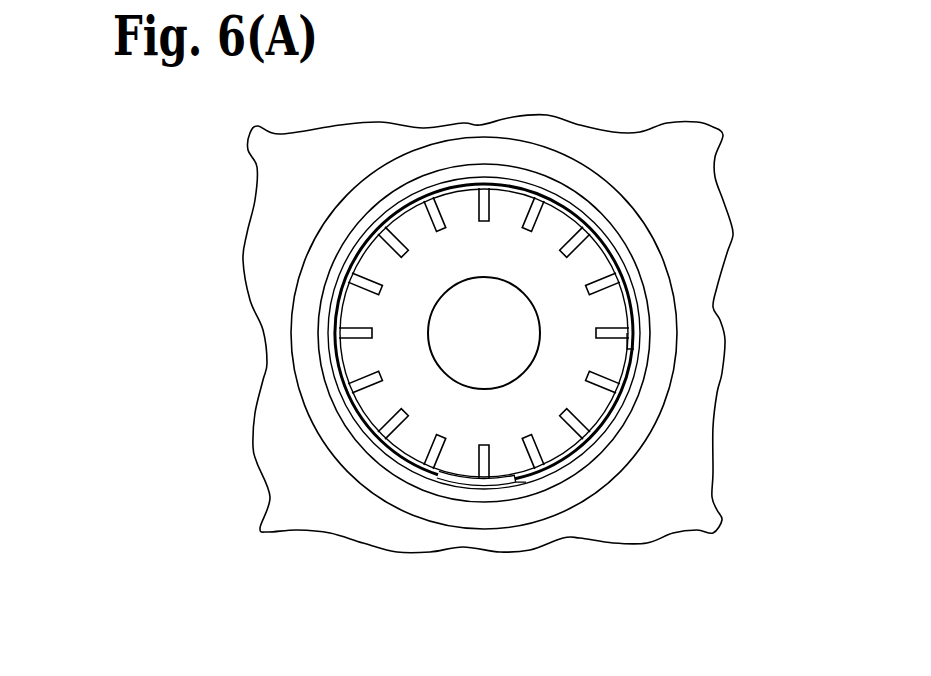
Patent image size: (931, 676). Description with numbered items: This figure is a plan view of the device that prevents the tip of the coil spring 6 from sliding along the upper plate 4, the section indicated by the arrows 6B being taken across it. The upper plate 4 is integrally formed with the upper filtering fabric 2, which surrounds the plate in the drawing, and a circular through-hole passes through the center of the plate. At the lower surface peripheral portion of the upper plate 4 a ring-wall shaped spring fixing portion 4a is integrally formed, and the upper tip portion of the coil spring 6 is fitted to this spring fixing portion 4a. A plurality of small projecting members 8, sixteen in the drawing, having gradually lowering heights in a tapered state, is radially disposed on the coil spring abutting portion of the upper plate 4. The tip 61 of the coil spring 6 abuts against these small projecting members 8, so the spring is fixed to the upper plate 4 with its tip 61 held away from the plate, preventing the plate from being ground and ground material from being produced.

The upper filtering fabric 2 is at (623, 143).
The upper plate 4 is at (640, 240).
The spring fixing portion 4a is at (638, 377).
The coil spring 6 is at (562, 197).
The tip 61 is at (533, 483).
The small projecting members 8 is at (590, 427).
The section line 6B is at (517, 112).